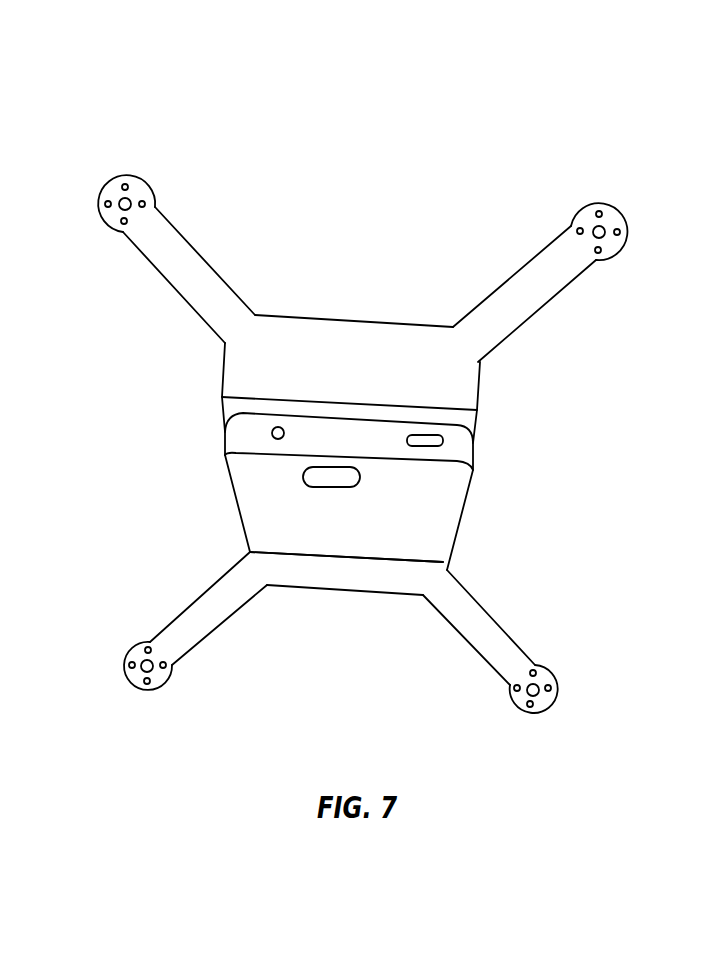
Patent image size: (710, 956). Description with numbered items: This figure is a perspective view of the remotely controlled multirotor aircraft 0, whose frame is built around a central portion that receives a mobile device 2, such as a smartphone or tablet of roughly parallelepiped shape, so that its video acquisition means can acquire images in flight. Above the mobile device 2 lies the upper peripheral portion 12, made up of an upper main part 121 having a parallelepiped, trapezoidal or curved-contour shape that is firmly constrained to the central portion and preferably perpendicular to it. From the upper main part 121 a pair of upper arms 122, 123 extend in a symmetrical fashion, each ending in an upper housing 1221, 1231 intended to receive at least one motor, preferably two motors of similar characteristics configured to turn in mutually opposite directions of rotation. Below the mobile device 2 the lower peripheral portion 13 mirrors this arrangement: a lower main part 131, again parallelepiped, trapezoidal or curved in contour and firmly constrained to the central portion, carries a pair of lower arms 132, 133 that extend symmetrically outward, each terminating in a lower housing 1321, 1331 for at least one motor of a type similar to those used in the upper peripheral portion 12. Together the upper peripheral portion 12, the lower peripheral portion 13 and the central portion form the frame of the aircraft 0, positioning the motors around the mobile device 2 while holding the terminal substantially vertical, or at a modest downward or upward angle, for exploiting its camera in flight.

The remotely controlled multirotor aircraft 0 is at (601, 131).
The upper peripheral portion 12 is at (288, 316).
The upper main part 121 is at (378, 347).
The upper arm 122 is at (533, 307).
The upper housing 1221 is at (590, 210).
The upper arm 123 is at (178, 267).
The upper housing 1231 is at (142, 187).
The mobile device 2 is at (428, 493).
The lower peripheral portion 13 is at (300, 590).
The lower main part 131 is at (387, 582).
The lower arm 132 is at (487, 638).
The lower housing 1321 is at (550, 673).
The lower arm 133 is at (193, 620).
The lower housing 1331 is at (127, 658).